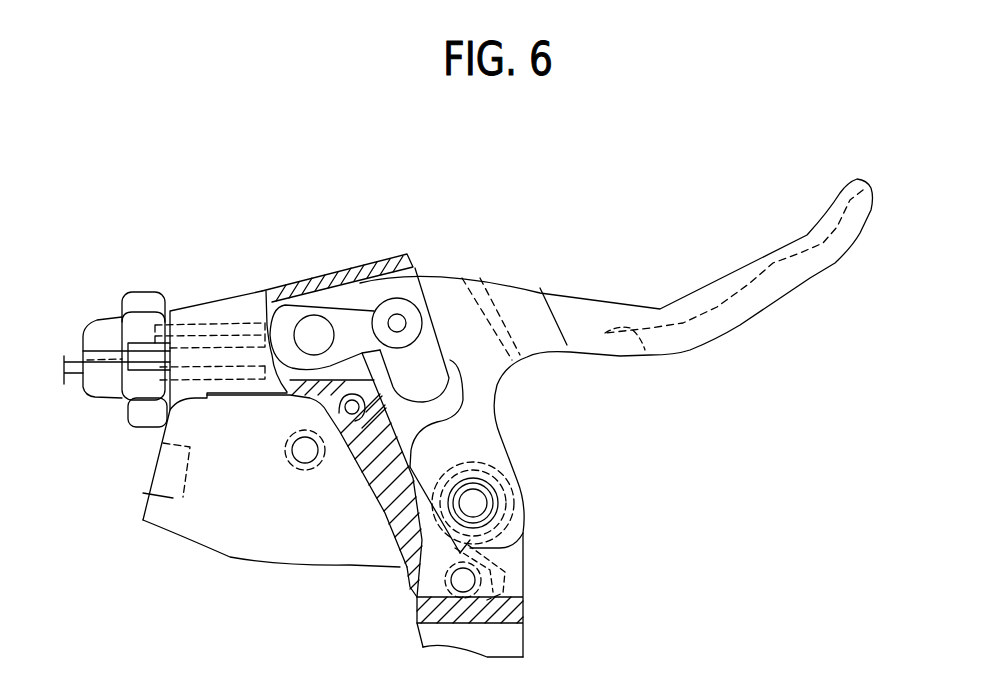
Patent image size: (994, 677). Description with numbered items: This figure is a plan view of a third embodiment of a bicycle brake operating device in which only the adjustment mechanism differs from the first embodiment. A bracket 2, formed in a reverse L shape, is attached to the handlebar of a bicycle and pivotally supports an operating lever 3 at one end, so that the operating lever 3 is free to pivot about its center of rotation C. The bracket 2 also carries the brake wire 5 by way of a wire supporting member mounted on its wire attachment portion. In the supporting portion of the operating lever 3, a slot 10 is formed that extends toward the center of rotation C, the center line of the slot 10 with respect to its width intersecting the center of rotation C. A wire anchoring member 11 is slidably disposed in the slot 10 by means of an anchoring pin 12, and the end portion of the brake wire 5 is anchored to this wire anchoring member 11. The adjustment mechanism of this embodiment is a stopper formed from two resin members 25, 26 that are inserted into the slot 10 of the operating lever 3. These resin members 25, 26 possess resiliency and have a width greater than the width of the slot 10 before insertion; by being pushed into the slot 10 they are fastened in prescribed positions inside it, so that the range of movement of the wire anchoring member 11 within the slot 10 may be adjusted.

The bracket 2 is at (397, 507).
The operating lever 3 is at (792, 228).
The brake wire 5 is at (195, 330).
The slot 10 is at (413, 303).
The wire anchoring member 11 is at (313, 301).
The anchoring pin 12 is at (395, 322).
The resin member 25 is at (520, 302).
The resin member 26 is at (430, 380).
The center of rotation C is at (477, 503).